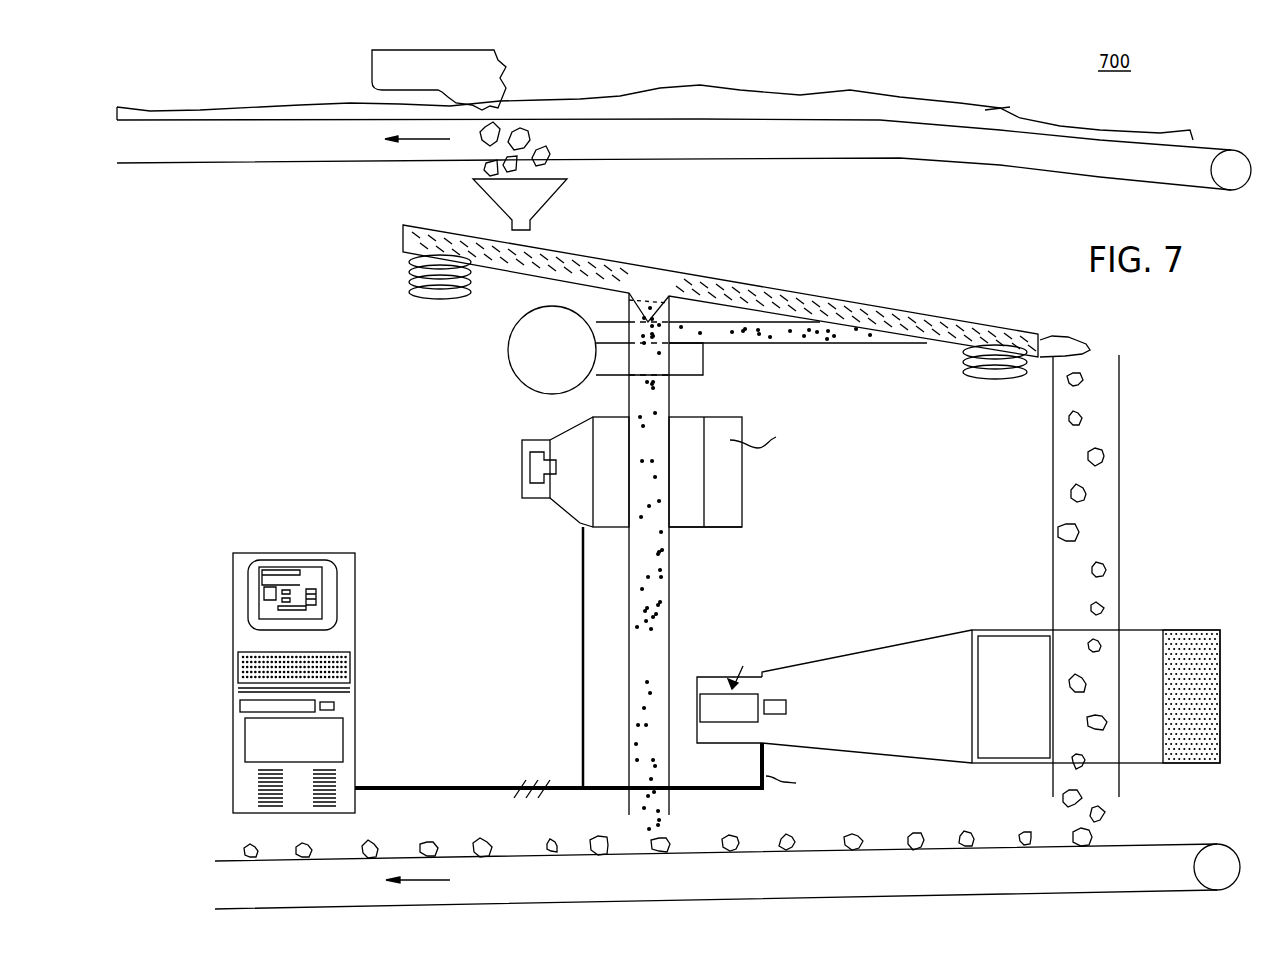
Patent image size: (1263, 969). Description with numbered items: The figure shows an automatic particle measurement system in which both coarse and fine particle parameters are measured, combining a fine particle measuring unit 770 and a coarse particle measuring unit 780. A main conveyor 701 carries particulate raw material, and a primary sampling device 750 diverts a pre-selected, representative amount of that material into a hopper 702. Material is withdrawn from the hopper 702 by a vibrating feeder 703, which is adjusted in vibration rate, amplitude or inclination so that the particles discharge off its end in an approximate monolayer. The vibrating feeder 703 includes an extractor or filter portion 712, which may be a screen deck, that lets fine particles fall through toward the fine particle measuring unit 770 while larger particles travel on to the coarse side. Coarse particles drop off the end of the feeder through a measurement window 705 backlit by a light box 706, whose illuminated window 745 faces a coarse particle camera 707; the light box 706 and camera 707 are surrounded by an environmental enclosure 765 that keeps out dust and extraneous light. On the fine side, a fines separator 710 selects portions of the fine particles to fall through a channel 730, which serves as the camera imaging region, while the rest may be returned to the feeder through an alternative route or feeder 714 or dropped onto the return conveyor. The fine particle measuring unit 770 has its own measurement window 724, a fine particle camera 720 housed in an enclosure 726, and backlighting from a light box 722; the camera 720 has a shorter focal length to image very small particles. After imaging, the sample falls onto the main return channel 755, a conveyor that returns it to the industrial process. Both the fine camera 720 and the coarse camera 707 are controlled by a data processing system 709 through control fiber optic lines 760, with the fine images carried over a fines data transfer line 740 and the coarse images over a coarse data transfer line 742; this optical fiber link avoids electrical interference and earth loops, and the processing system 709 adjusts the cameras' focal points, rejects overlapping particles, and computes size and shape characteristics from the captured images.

The main conveyor 701 is at (771, 166).
The hopper 702 is at (560, 190).
The vibrating feeder 703 is at (722, 275).
The measurement window 705 is at (1122, 437).
The light box 706 is at (1128, 766).
The coarse particle camera 707 is at (786, 712).
The data processing system 709 is at (355, 800).
The fines separator 710 is at (508, 350).
The extractor or filter portion 712 is at (598, 294).
The alternative route or feeder 714 is at (775, 345).
The fine particle camera 720 is at (522, 470).
The light box 722 is at (737, 477).
The measurement window 724 is at (690, 528).
The enclosure 726 is at (618, 415).
The channel 730 is at (669, 578).
The fines data transfer 740 is at (583, 604).
The coarse data transfer 742 is at (690, 790).
The coarse camera 745 is at (1018, 648).
The primary sampling device 750 is at (385, 72).
The main return channel 755 is at (1152, 852).
The control fiber optic lines 760 is at (522, 775).
The environmental enclosure 765 is at (848, 645).
The fine particle measuring unit 770 is at (418, 412).
The coarse particle measuring unit 780 is at (1215, 500).